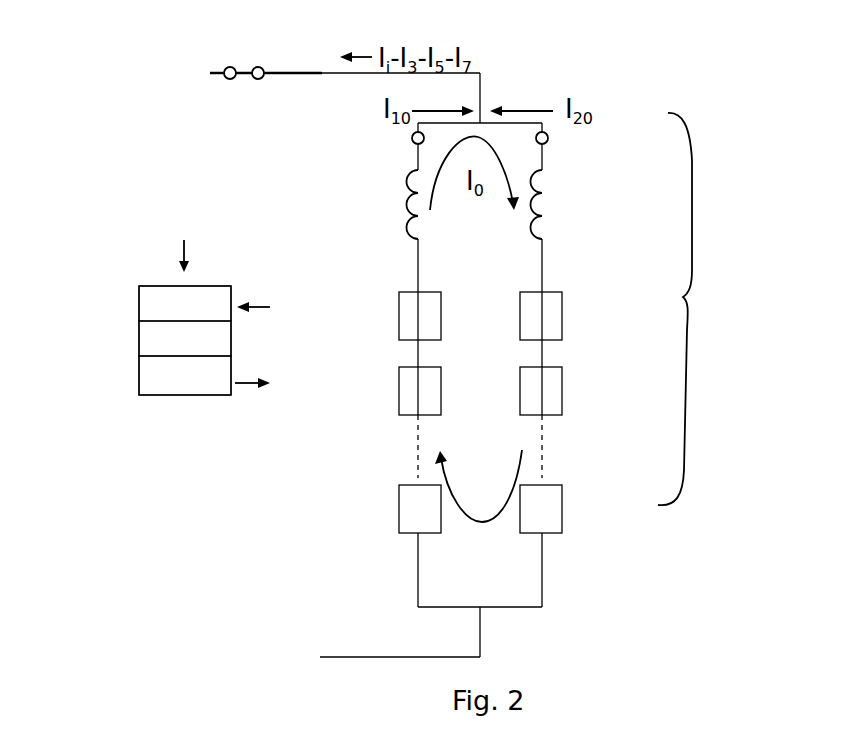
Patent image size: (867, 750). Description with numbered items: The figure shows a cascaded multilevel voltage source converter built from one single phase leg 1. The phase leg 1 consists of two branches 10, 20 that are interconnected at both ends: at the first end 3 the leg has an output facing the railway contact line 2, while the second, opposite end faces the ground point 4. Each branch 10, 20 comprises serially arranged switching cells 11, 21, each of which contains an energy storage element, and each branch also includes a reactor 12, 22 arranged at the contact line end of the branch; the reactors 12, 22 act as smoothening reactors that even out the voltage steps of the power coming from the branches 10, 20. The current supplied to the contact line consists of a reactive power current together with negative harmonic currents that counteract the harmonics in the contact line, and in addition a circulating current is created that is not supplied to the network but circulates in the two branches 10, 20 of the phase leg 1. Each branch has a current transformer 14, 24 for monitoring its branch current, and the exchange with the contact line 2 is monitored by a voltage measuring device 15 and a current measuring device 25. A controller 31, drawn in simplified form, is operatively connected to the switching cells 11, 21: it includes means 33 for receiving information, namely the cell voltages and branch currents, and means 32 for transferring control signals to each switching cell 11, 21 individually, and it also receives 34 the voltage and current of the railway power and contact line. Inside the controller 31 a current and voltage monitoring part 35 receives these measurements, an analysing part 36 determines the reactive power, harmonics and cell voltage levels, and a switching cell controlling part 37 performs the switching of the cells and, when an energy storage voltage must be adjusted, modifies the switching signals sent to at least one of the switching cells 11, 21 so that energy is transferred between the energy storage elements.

The phase leg 1 is at (688, 309).
The railway contact line 2 is at (306, 73).
The first end 3 is at (481, 97).
The ground point 4 is at (480, 636).
The first branch 10 is at (420, 580).
The switching cell 11 is at (399, 507).
The reactor 12 is at (405, 197).
The current transformer 14 is at (412, 144).
The voltage measuring device 15 is at (228, 66).
The second branch 20 is at (542, 578).
The switching cell 21 is at (562, 506).
The reactor 22 is at (537, 218).
The current transformer 24 is at (548, 142).
The current measuring device 25 is at (258, 80).
The controller 31 is at (116, 298).
The means for controlling 32 is at (257, 371).
The means for monitoring 33 is at (256, 295).
The monitoring input 34 is at (202, 256).
The current and voltage monitoring part 35 is at (185, 304).
The analysing part 36 is at (185, 339).
The switching cell controlling part 37 is at (185, 375).